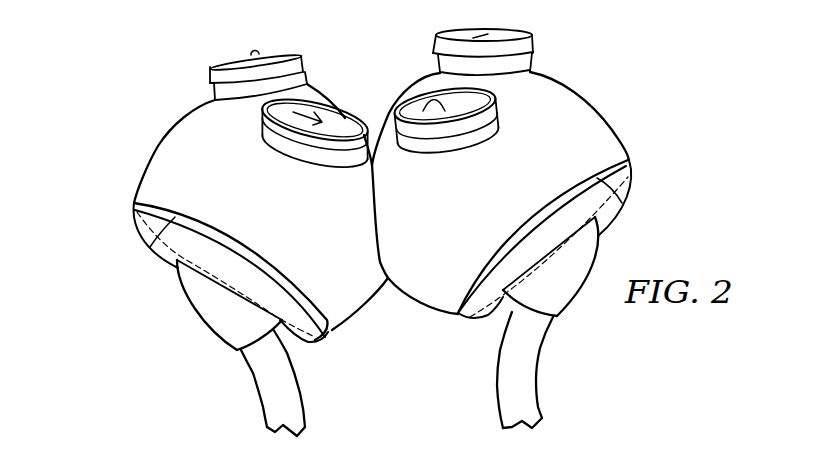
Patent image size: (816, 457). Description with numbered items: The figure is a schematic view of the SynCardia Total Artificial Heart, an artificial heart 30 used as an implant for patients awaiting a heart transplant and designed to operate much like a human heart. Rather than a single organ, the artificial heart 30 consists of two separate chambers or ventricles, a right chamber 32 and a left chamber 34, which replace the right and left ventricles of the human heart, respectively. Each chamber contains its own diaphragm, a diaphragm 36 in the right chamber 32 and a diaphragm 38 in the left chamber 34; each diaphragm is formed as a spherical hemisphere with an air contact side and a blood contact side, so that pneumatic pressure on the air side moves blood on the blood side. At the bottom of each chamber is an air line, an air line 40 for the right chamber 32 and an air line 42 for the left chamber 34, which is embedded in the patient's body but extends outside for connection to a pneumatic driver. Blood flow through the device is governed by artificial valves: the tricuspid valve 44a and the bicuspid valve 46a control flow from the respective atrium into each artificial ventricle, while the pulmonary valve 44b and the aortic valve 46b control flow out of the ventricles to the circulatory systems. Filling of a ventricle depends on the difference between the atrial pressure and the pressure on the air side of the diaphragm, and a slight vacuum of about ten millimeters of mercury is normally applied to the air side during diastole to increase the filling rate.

The artificial heart 30 is at (111, 52).
The right chamber 32 is at (150, 138).
The left chamber 34 is at (614, 105).
The diaphragm of the right chamber 36 is at (150, 247).
The diaphragm of the left chamber 38 is at (622, 203).
The air line of the right chamber 40 is at (257, 386).
The air line of the left chamber 42 is at (540, 360).
The tricuspid artificial valve 44a is at (208, 74).
The pulmonary artificial valve 44b is at (372, 88).
The bicuspid artificial valve 46a is at (533, 41).
The aortic artificial valve 46b is at (440, 91).